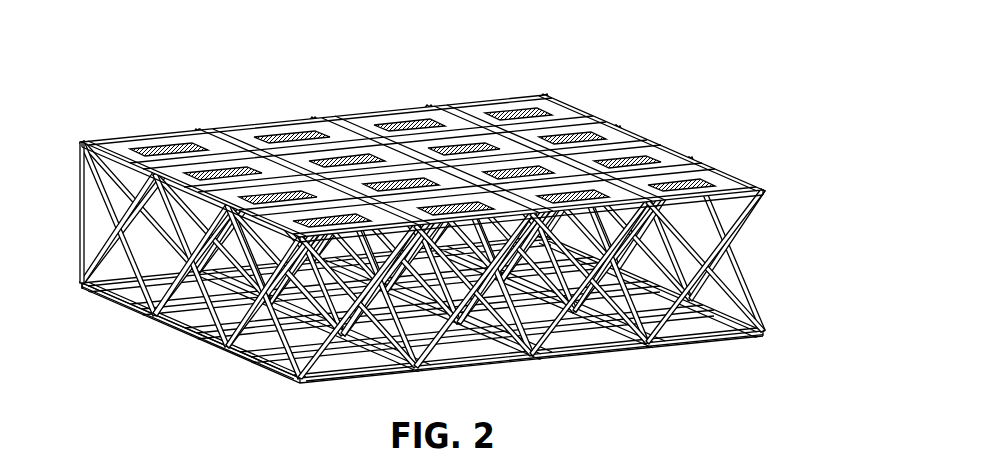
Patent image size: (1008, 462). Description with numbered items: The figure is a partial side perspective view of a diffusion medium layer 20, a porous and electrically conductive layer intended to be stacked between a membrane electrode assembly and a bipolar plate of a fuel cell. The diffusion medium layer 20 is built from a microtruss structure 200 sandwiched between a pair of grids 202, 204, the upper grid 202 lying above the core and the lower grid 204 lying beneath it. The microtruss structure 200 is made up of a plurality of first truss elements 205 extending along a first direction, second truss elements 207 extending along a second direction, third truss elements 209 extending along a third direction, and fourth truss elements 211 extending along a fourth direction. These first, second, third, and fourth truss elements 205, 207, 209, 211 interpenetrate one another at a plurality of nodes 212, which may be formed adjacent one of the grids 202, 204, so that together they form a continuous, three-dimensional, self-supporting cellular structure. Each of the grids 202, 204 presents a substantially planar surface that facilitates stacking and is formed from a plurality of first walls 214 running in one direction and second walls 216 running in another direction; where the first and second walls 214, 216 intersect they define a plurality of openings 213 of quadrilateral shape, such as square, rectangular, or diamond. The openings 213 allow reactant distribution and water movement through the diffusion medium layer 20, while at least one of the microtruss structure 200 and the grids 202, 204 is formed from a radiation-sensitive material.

The diffusion medium layer 20 is at (690, 103).
The microtruss structure 200 is at (437, 245).
The grid 202 is at (431, 127).
The grid 204 is at (400, 310).
The first truss elements 205 is at (88, 281).
The second truss elements 207 is at (137, 308).
The third truss elements 209 is at (108, 220).
The fourth truss elements 211 is at (105, 262).
The nodes 212 is at (616, 320).
The openings 213 is at (396, 173).
The first walls 214 is at (322, 118).
The second walls 216 is at (283, 147).